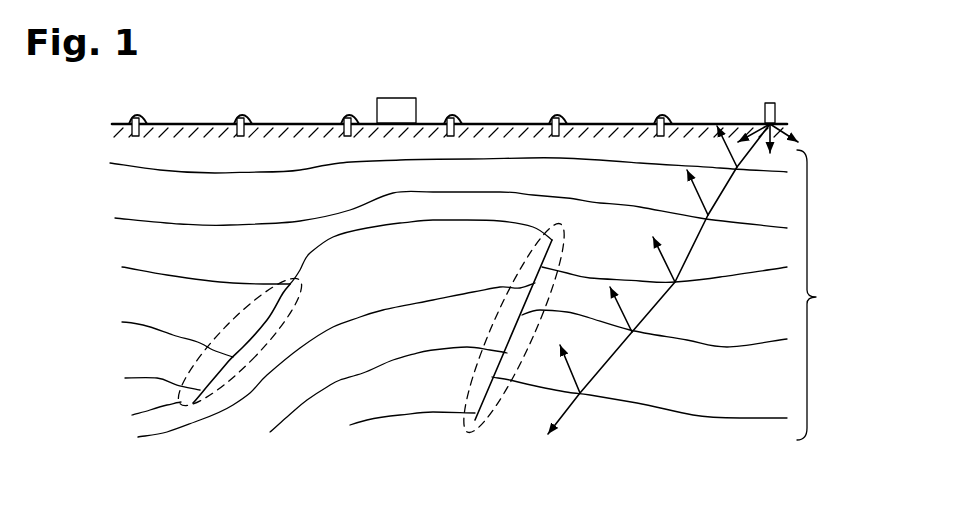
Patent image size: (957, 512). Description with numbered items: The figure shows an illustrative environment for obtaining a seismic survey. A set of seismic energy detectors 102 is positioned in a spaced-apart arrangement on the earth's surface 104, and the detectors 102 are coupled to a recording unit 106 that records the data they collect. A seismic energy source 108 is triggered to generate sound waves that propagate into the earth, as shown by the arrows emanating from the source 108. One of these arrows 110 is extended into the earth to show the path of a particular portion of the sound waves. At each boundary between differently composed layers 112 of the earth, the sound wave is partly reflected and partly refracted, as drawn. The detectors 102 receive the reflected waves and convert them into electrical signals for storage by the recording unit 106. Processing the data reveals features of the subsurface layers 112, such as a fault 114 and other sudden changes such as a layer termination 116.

The seismic energy detectors 102 is at (233, 117).
The earth's surface 104 is at (122, 123).
The recording unit 106 is at (400, 98).
The seismic energy source 108 is at (767, 102).
The arrow 110 is at (570, 406).
The layers 112 is at (481, 295).
The fault 114 is at (468, 434).
The layer termination 116 is at (193, 403).